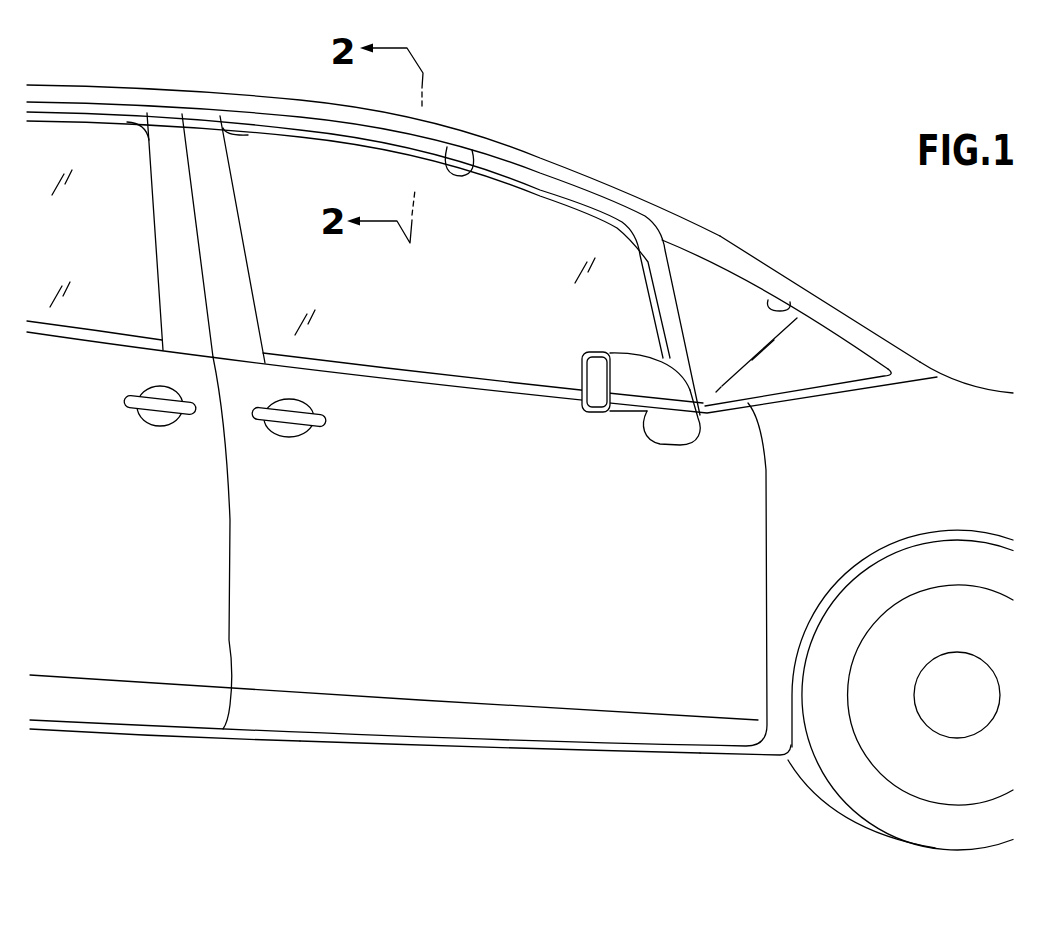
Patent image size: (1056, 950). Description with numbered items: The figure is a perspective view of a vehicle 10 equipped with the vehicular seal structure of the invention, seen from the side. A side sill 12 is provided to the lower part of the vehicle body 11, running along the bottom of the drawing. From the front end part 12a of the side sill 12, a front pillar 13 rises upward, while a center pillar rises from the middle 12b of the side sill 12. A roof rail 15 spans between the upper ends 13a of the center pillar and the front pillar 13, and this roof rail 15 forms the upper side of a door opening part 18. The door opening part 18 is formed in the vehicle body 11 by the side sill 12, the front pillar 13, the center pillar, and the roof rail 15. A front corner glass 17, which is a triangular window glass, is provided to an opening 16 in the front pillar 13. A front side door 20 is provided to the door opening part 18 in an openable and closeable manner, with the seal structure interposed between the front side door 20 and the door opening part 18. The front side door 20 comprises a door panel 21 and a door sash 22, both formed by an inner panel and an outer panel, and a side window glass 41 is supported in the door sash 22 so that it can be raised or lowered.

The vehicle 10 is at (757, 144).
The vehicle body 11 is at (618, 180).
The side sill 12 is at (428, 743).
The front end part of the side sill 12a is at (732, 756).
The middle of the side sill 12b is at (247, 739).
The front pillar 13 is at (772, 270).
The upper end of the front pillar 13a is at (642, 206).
The roof rail 15 is at (527, 161).
The opening 16 is at (795, 305).
The front corner glass 17 is at (818, 353).
The door opening part 18 is at (470, 170).
The front side door 20 is at (218, 443).
The door panel 21 is at (253, 548).
The door sash 22 is at (283, 122).
The side window glass 41 is at (277, 237).